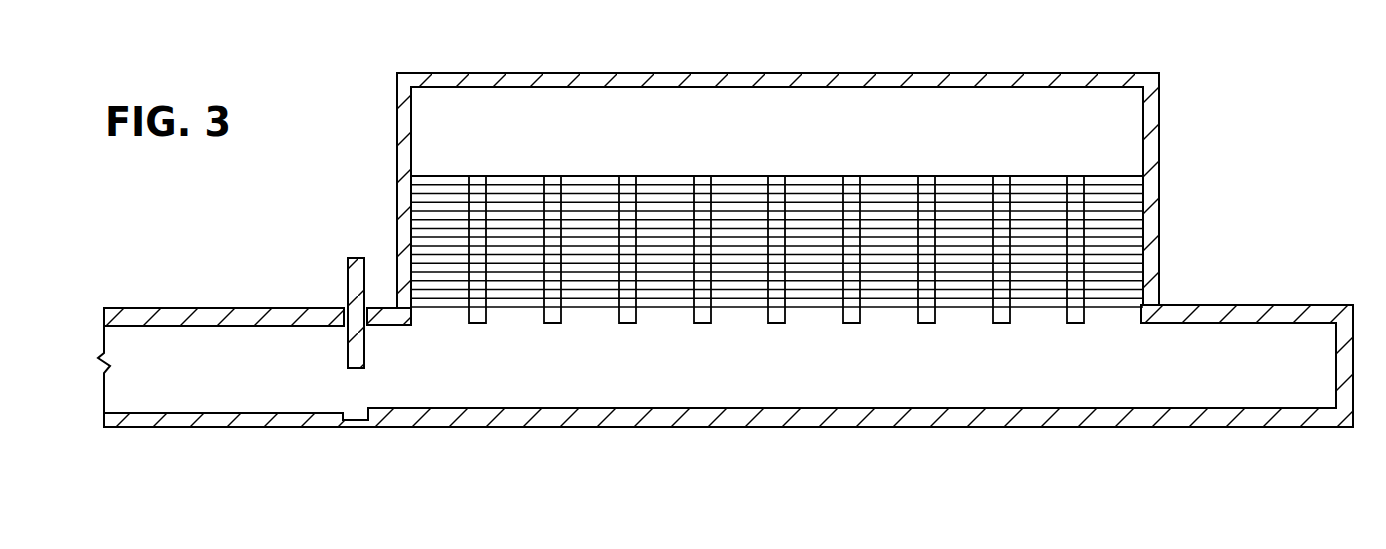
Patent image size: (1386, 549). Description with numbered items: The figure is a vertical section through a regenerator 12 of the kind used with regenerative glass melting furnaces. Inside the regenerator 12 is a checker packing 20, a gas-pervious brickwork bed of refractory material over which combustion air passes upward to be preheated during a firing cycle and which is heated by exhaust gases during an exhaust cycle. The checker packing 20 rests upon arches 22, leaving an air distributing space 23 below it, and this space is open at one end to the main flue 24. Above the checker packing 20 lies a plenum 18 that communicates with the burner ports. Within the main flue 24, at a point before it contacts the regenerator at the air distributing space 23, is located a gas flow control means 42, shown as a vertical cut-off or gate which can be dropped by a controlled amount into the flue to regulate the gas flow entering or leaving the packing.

The regenerator 12 is at (403, 121).
The plenum 18 is at (792, 158).
The checker packing 20 is at (435, 200).
The arches 22 is at (1082, 313).
The air distributing space 23 is at (793, 376).
The main flue 24 is at (183, 374).
The gas flow control means 42 is at (350, 262).